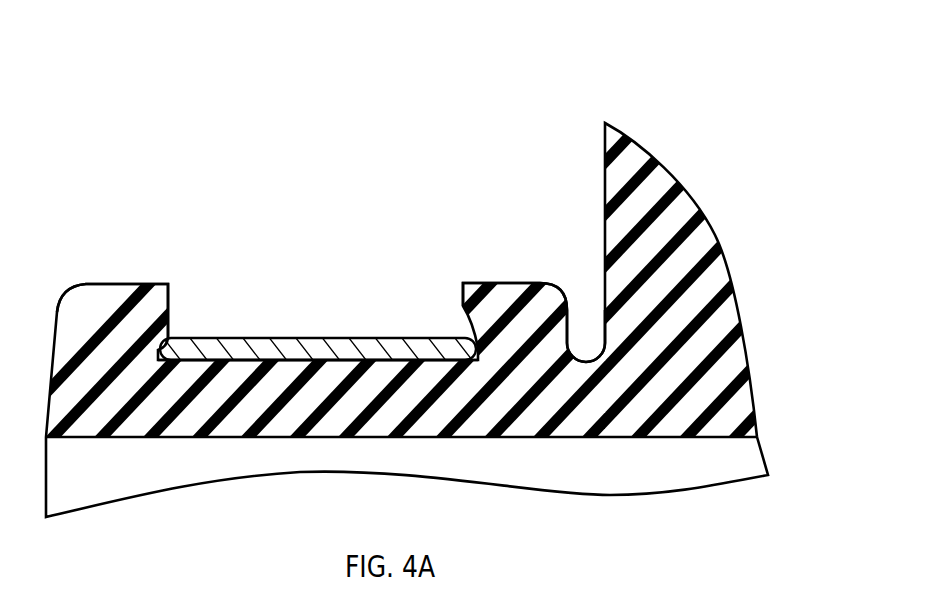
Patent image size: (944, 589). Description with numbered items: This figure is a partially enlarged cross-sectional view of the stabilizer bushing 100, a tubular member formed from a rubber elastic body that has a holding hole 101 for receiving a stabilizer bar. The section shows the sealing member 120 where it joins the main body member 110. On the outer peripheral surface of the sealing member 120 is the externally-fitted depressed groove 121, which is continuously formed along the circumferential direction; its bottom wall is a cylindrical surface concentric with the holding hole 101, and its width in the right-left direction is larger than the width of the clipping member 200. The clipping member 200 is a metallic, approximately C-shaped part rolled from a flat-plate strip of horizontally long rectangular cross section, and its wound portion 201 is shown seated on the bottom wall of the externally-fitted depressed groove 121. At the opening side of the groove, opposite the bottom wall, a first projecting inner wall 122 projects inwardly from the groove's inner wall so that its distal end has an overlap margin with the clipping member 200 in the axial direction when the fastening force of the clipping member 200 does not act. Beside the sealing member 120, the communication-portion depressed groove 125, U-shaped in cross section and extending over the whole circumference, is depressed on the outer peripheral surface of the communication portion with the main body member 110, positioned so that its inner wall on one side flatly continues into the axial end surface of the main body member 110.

The stabilizer bushing 100 is at (742, 101).
The holding hole 101 is at (163, 438).
The main body member 110 is at (694, 207).
The sealing member 120 is at (443, 188).
The externally-fitted depressed groove 121 is at (346, 322).
The first projecting inner wall 122 is at (169, 293).
The communication-portion depressed groove 125 is at (587, 357).
The clipping member 200 is at (318, 312).
The wound portion 201 is at (275, 338).